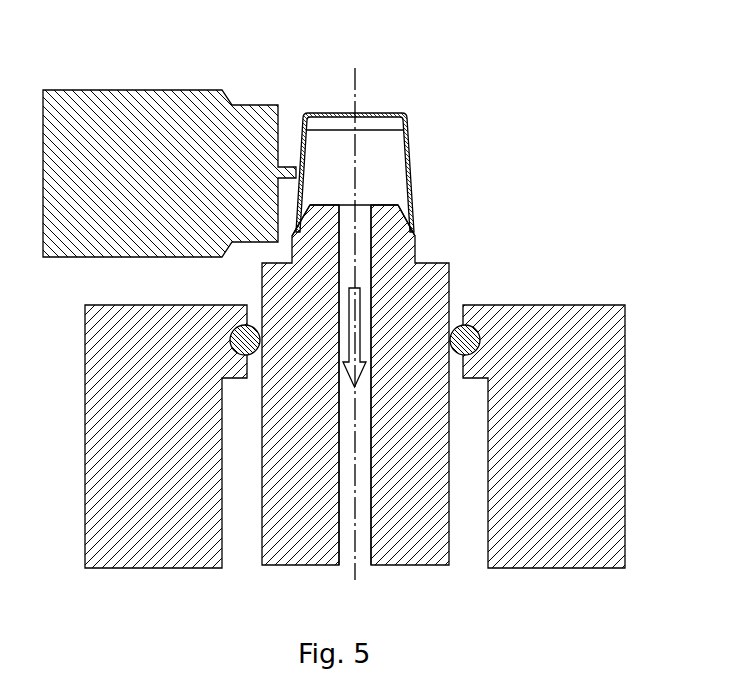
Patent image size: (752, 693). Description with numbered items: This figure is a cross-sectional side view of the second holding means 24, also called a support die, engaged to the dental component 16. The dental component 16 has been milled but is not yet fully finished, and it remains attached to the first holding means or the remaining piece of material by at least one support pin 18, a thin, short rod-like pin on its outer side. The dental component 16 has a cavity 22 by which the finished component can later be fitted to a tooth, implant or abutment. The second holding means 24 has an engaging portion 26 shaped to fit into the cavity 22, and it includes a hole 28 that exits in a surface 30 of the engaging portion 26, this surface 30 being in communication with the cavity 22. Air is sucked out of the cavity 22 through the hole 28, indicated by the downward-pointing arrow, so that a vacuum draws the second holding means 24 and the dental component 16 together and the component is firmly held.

The dental component 16 is at (410, 155).
The support pin 18 is at (292, 168).
The cavity 22 is at (386, 170).
The second holding means 24 is at (427, 277).
The engaging portion 26 is at (388, 218).
The hole 28 is at (365, 537).
The surface 30 is at (385, 203).